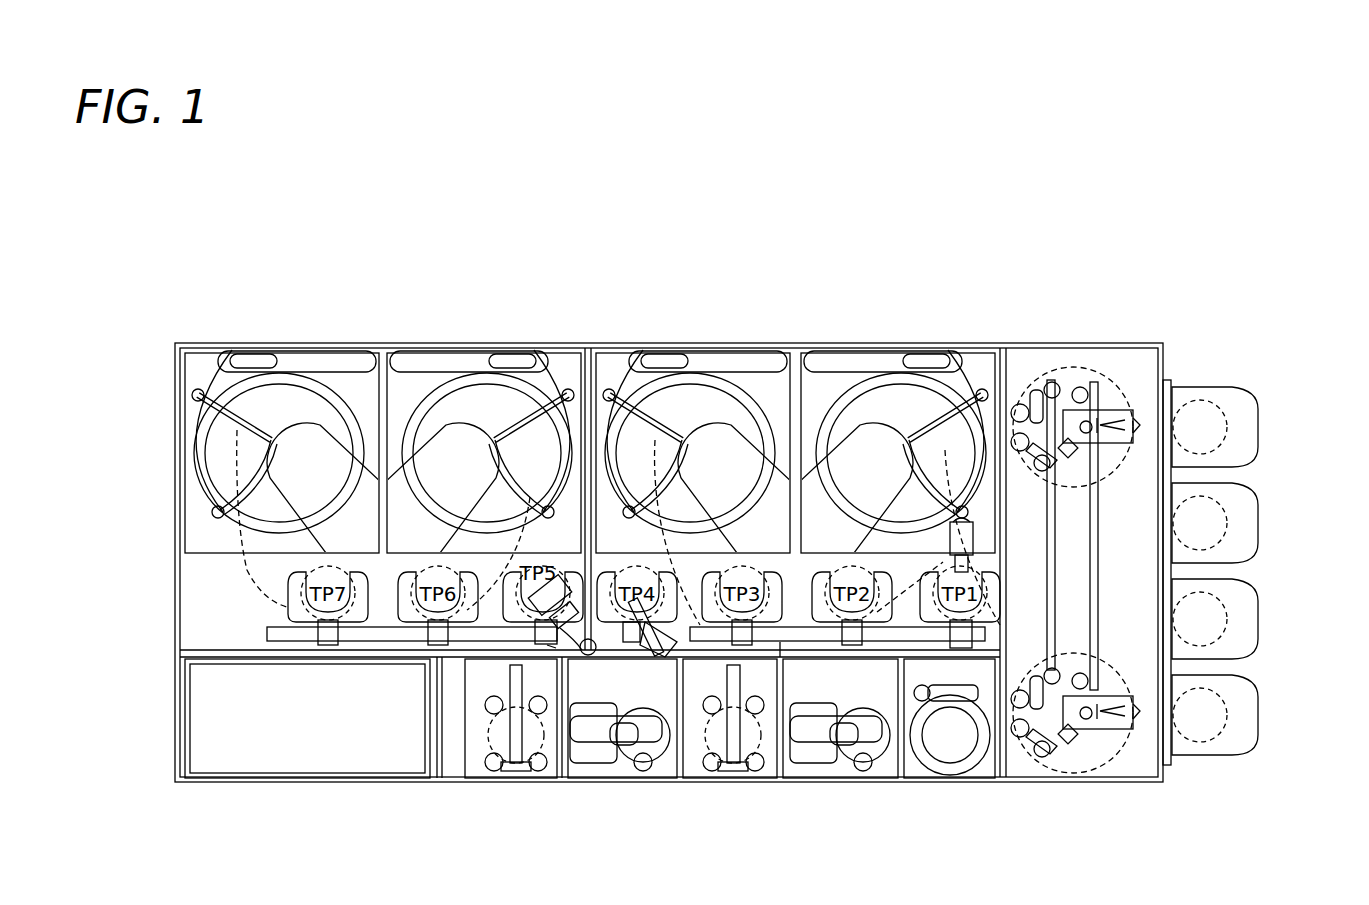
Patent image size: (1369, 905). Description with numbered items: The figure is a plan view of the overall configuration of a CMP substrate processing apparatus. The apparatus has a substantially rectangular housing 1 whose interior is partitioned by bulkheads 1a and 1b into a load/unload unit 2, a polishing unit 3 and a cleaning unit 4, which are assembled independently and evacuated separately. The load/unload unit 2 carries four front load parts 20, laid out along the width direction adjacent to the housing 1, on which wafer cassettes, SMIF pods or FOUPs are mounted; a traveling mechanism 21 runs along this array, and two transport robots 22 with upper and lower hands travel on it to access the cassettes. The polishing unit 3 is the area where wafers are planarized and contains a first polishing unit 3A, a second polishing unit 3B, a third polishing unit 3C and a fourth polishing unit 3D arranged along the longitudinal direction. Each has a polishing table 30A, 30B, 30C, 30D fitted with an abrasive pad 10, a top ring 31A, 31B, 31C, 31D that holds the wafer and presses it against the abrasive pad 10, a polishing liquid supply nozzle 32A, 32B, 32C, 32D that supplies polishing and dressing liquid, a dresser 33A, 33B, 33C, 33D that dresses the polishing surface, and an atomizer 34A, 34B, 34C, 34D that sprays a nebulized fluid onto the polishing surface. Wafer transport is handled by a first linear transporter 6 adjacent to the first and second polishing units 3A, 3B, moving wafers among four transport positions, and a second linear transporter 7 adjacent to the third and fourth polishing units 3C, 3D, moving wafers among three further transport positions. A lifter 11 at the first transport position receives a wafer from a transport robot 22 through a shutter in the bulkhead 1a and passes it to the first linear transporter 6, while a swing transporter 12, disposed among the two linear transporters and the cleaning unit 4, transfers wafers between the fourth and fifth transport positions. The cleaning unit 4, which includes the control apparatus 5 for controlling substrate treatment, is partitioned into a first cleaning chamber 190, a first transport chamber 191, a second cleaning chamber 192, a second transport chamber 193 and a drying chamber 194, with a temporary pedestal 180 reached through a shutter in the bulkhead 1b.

The housing 1 is at (1162, 345).
The bulkhead 1a is at (1005, 350).
The bulkhead 1b is at (985, 648).
The load/unload unit 2 is at (1238, 352).
The polishing unit 3 is at (828, 252).
The first polishing unit 3A is at (936, 333).
The second polishing unit 3B is at (659, 333).
The third polishing unit 3C is at (521, 333).
The fourth polishing unit 3D is at (247, 333).
The cleaning unit 4 is at (638, 798).
The control apparatus 5 is at (290, 776).
The first linear transporter 6 is at (780, 642).
The second linear transporter 7 is at (383, 642).
The abrasive pad 10 is at (262, 505).
The lifter 11 is at (975, 535).
The swing transporter 12 is at (556, 648).
The front load part 20 is at (1263, 430).
The traveling mechanism 21 is at (1100, 572).
The transport robot 22 is at (1090, 372).
The polishing table 30A is at (810, 350).
The polishing table 30B is at (787, 350).
The polishing table 30C is at (395, 350).
The polishing table 30D is at (373, 350).
The top ring 31A is at (895, 350).
The top ring 31B is at (698, 350).
The top ring 31C is at (483, 350).
The top ring 31D is at (287, 350).
The polishing liquid supply nozzle 32A is at (984, 390).
The polishing liquid supply nozzle 32B is at (642, 468).
The polishing liquid supply nozzle 32C is at (572, 390).
The polishing liquid supply nozzle 32D is at (198, 390).
The dresser 33A is at (878, 350).
The dresser 33B is at (735, 350).
The dresser 33C is at (466, 350).
The dresser 33D is at (322, 350).
The atomizer 34A is at (975, 350).
The atomizer 34B is at (618, 350).
The atomizer 34C is at (557, 350).
The atomizer 34D is at (207, 350).
The temporary pedestal 180 is at (660, 652).
The first cleaning chamber 190 is at (477, 776).
The first transport chamber 191 is at (588, 776).
The second cleaning chamber 192 is at (693, 776).
The second transport chamber 193 is at (802, 776).
The drying chamber 194 is at (922, 776).